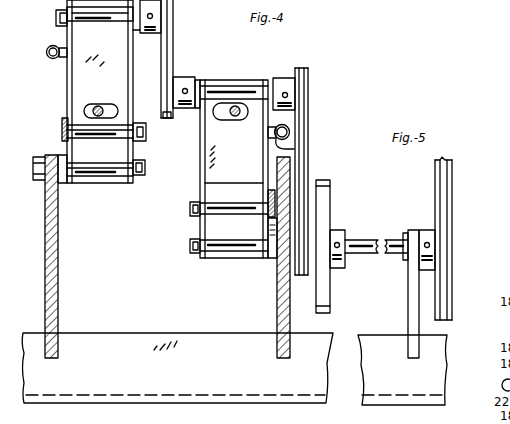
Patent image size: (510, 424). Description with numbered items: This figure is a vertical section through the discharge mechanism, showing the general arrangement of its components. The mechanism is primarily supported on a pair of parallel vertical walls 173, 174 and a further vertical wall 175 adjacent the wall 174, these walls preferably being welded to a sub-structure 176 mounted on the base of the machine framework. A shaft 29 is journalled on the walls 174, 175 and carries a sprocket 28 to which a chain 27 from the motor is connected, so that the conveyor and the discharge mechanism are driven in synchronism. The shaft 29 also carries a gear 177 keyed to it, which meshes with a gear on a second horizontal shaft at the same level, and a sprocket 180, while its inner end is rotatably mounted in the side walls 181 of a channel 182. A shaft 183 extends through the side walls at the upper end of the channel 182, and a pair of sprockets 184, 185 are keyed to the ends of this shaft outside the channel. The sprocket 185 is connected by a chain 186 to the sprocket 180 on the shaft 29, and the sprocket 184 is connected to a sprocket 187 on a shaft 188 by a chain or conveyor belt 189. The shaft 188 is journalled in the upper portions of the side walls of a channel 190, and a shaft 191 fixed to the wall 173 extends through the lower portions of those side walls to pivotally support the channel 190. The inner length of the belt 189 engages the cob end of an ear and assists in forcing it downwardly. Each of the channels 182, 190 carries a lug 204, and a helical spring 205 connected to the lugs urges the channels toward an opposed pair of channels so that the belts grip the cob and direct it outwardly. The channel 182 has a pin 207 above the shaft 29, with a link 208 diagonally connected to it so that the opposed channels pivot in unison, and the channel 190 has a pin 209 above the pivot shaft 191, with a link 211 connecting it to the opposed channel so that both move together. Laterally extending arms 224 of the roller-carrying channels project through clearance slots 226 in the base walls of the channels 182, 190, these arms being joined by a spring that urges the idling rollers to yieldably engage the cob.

The chain 27 is at (443, 173).
The sprocket 28 is at (450, 229).
The shaft 29 is at (396, 256).
The vertical wall 173 is at (58, 321).
The vertical wall 174 is at (290, 327).
The vertical wall 175 is at (416, 300).
The sub-structure 176 is at (212, 342).
The gear 177 is at (324, 292).
The sprocket 180 is at (300, 275).
The side walls 181 is at (264, 184).
The channel 182 is at (203, 154).
The shaft 183 is at (225, 90).
The sprocket 184 is at (166, 117).
The sprocket 185 is at (300, 86).
The chain 186 is at (308, 135).
The sprocket 187 is at (168, 14).
The shaft 188 is at (116, 20).
The chain or conveyor belt 189 is at (170, 45).
The channel 190 is at (77, 40).
The shaft 191 is at (116, 175).
The lug 204 is at (63, 58).
The helical spring 205 is at (46, 52).
The pin 207 is at (211, 216).
The link 208 is at (274, 217).
The pin 209 is at (92, 132).
The link 211 is at (63, 120).
The laterally extending arm 224 is at (91, 104).
The clearance slot 226 is at (108, 108).